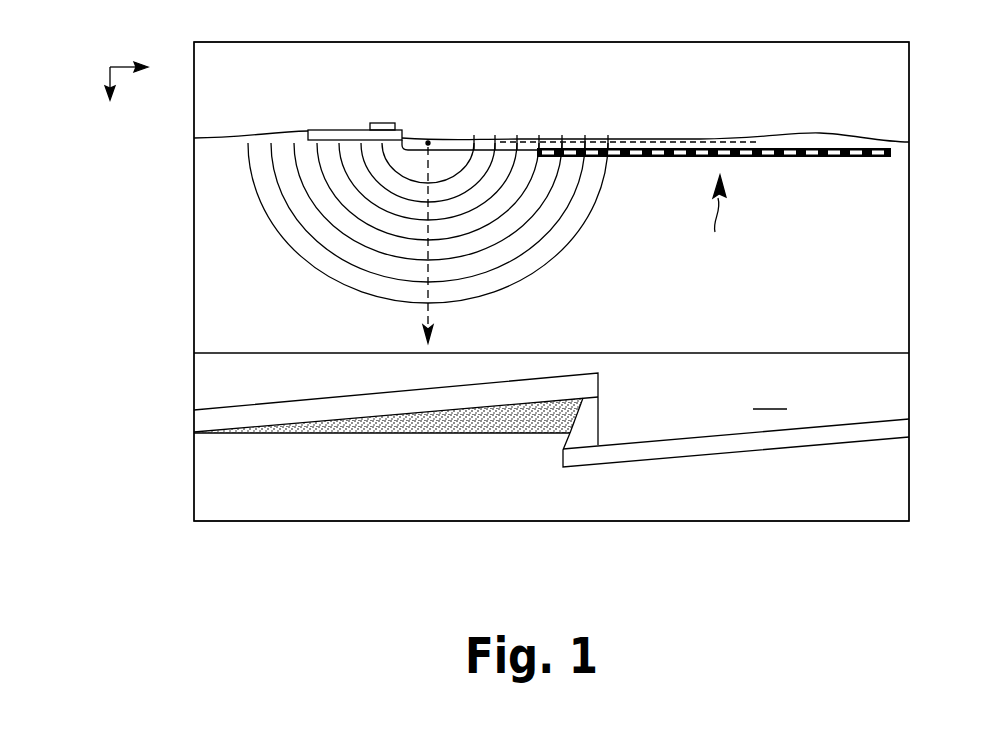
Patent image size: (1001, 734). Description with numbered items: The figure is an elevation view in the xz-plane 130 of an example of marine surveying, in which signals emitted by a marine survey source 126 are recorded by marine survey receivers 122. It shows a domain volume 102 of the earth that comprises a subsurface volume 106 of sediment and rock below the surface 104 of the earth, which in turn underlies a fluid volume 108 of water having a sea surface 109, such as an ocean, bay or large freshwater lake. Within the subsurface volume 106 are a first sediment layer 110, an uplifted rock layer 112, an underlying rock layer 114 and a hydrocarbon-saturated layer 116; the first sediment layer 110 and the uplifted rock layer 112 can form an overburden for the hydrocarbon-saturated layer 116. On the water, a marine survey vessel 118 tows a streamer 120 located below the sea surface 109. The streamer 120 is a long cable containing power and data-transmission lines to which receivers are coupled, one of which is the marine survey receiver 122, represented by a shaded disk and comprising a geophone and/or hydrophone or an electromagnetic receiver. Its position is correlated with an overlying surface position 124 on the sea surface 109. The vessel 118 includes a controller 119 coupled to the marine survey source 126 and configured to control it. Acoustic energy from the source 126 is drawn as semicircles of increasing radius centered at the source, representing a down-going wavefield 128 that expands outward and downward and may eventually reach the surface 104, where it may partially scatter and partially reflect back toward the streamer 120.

The domain volume 102 is at (136, 191).
The surface of the earth 104 is at (247, 353).
The subsurface volume 106 is at (212, 373).
The fluid volume 108 is at (212, 270).
The sea surface 109 is at (672, 138).
The first sediment layer 110 is at (770, 398).
The uplifted rock layer 112 is at (212, 423).
The underlying rock layer 114 is at (307, 510).
The hydrocarbon-saturated layer 116 is at (395, 435).
The marine survey vessel 118 is at (345, 130).
The controller 119 is at (386, 123).
The streamer 120 is at (732, 216).
The marine survey receiver 122 is at (822, 160).
The surface position 124 is at (826, 135).
The marine survey source 126 is at (426, 140).
The down-going wavefield 128 is at (578, 232).
The xz-plane 130 is at (110, 67).